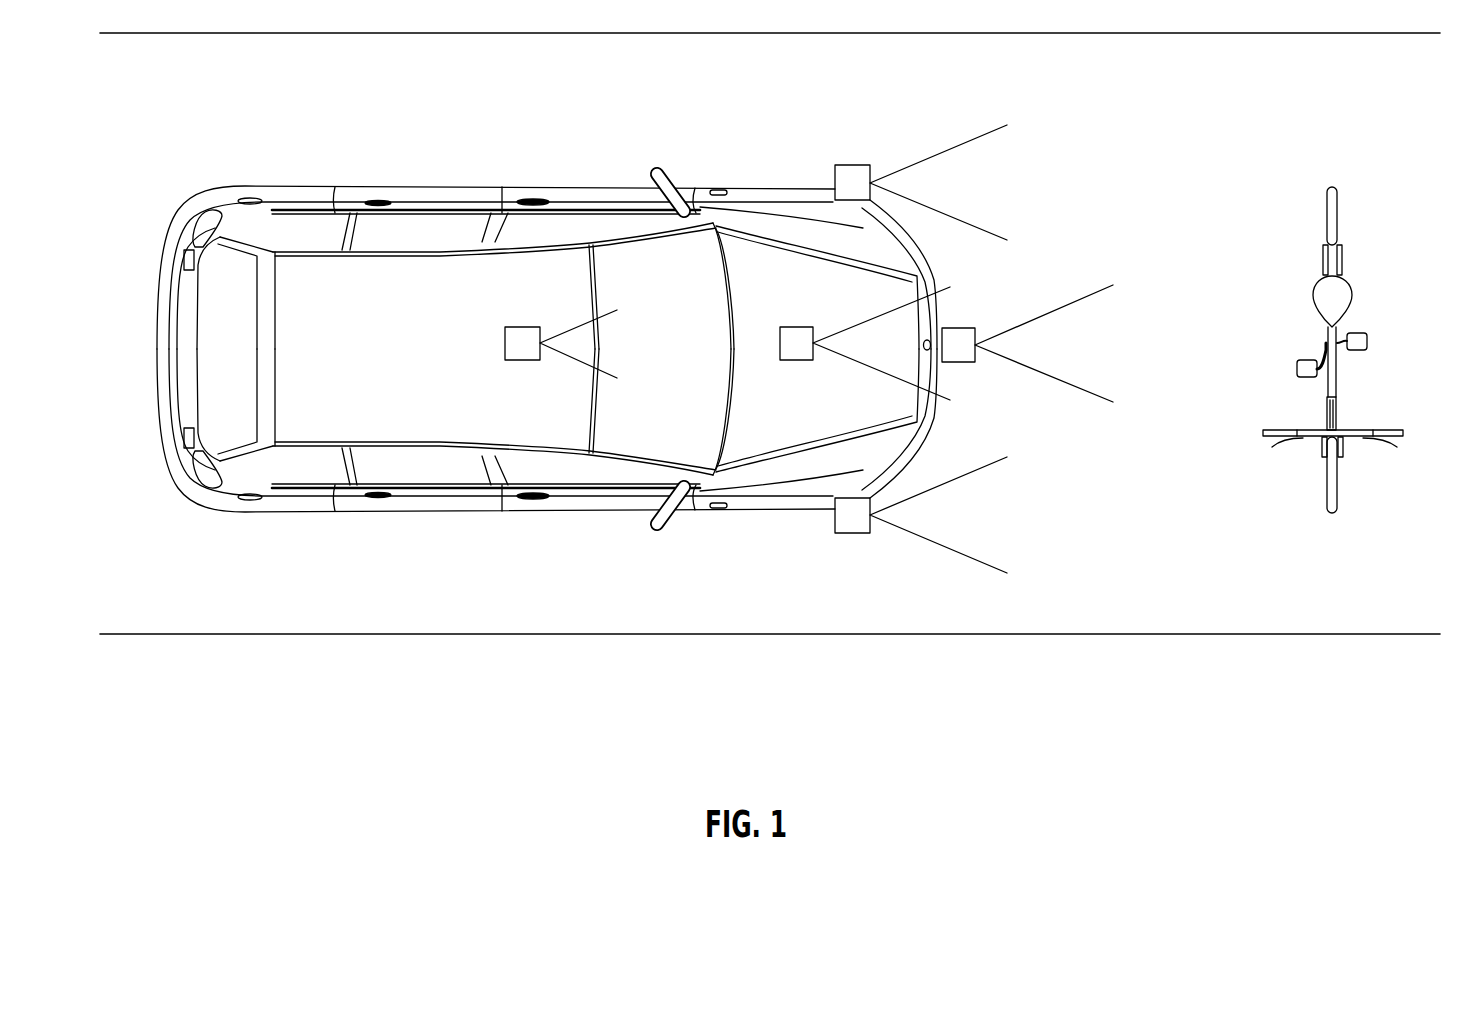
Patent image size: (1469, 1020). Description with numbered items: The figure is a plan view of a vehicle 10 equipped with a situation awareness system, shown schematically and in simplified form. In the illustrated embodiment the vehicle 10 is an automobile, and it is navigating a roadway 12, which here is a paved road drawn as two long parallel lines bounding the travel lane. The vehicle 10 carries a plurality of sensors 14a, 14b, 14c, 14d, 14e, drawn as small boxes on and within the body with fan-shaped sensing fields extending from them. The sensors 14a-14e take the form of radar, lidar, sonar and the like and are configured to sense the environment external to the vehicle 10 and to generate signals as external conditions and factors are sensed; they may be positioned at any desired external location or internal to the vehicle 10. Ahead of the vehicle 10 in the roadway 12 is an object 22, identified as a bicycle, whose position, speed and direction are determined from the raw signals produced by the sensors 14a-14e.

The vehicle 10 is at (409, 186).
The roadway 12 is at (1143, 636).
The sensor 14a is at (520, 327).
The sensor 14b is at (852, 165).
The sensor 14c is at (960, 328).
The sensor 14d is at (852, 534).
The sensor 14e is at (802, 327).
The object 22 is at (1338, 472).